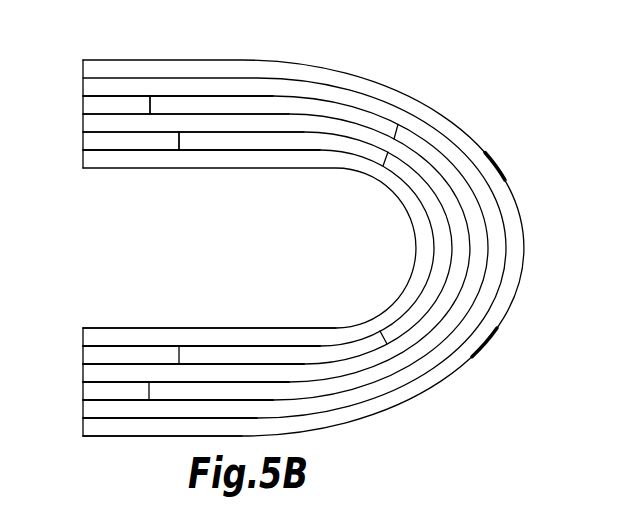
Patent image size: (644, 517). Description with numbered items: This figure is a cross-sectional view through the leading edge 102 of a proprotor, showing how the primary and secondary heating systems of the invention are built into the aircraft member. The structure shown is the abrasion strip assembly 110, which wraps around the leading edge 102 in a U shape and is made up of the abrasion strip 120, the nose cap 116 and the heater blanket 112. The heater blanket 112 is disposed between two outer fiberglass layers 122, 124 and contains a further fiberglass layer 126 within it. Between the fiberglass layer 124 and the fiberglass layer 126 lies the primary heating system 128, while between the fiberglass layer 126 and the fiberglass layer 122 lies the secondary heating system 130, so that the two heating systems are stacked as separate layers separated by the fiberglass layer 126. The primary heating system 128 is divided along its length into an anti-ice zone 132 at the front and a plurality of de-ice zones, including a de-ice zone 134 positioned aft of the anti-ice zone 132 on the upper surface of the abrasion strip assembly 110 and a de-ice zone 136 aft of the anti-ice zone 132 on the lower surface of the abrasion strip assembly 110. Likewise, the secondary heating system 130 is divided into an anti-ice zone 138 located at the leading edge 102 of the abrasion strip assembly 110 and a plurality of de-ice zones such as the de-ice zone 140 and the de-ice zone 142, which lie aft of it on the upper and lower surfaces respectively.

The leading edge 102 is at (526, 248).
The abrasion strip assembly 110 is at (498, 150).
The heater blanket 112 is at (78, 96).
The nose cap 116 is at (510, 300).
The abrasion strip 120 is at (83, 428).
The fiberglass layer 122 is at (83, 338).
The fiberglass layer 124 is at (83, 410).
The fiberglass layer 126 is at (83, 374).
The primary heating system 128 is at (83, 392).
The secondary heating system 130 is at (83, 356).
The anti-ice zone 132 is at (410, 133).
The de-ice zone 134 is at (205, 105).
The de-ice zone 136 is at (208, 392).
The anti-ice zone 138 is at (408, 322).
The de-ice zone 140 is at (303, 145).
The de-ice zone 142 is at (300, 352).